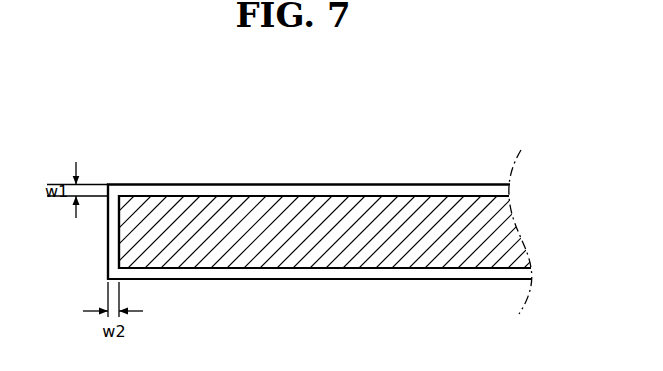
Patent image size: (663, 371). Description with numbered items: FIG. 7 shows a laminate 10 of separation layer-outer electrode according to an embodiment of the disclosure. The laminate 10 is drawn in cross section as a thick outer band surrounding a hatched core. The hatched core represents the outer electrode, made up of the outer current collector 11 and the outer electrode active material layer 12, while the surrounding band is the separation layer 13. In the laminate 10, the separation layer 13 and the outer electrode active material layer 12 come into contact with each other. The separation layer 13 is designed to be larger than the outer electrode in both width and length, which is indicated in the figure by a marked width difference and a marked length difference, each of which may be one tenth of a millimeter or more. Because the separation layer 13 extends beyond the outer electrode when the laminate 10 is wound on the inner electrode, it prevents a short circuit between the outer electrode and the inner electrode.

The laminate of separation layer-outer electrode 10 is at (379, 169).
The outer current collector 11 is at (267, 207).
The outer electrode active material layer 12 is at (325, 232).
The separation layer 13 is at (225, 188).